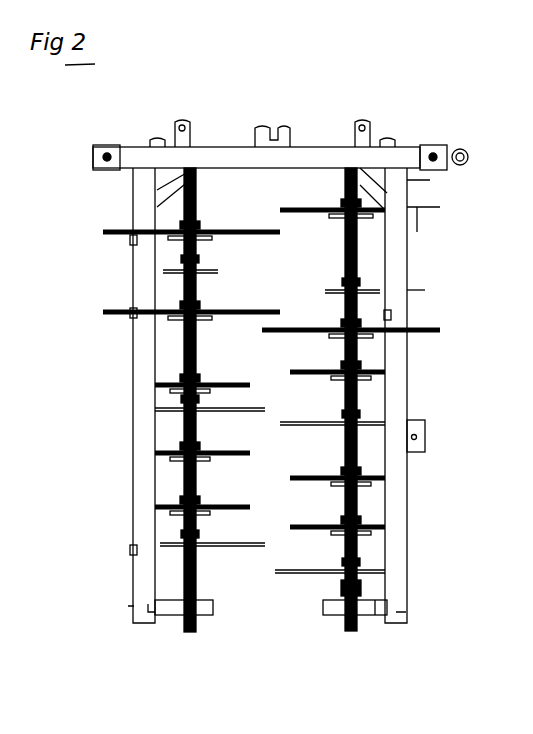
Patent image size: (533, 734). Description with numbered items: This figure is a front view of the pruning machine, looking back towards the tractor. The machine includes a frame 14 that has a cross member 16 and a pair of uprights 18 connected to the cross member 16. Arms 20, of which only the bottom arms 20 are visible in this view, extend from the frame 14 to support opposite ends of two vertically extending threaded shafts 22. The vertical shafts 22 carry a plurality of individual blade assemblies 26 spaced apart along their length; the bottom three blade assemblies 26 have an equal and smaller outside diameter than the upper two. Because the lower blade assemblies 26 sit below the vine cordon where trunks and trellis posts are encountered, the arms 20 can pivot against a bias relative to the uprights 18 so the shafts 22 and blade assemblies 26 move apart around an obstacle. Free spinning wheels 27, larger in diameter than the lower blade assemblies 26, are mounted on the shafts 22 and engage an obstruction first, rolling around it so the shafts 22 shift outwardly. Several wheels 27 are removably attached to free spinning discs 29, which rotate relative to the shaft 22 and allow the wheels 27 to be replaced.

The frame 14 is at (408, 290).
The cross member 16 is at (318, 148).
The uprights 18 is at (130, 262).
The arms 20 is at (205, 614).
The threaded shafts 22 is at (186, 342).
The blade assemblies 26 is at (228, 220).
The free spinning wheels 27 is at (138, 406).
The free spinning discs 29 is at (160, 233).